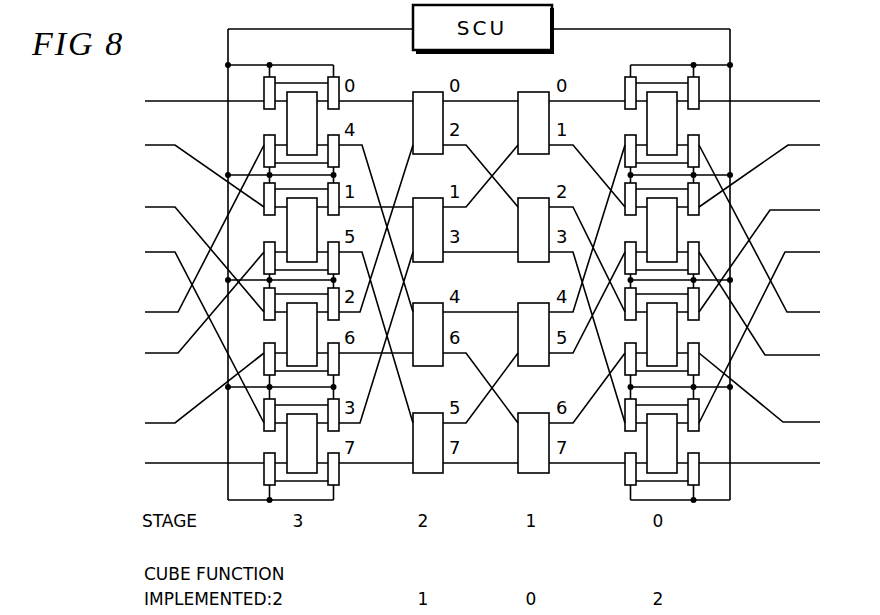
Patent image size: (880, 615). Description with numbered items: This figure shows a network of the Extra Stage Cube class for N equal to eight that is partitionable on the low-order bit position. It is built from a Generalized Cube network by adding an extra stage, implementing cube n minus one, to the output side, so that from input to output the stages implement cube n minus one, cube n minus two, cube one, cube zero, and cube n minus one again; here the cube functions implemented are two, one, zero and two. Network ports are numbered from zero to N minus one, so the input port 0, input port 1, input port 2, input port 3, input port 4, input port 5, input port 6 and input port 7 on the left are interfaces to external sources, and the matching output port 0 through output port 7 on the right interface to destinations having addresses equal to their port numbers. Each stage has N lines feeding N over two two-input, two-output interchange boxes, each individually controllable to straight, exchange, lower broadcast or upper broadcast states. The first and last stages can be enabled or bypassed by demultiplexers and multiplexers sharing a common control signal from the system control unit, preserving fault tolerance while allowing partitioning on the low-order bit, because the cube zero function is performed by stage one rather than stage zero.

The network port 0 is at (482, 88).
The network port 1 is at (482, 163).
The network port 2 is at (482, 248).
The network port 3 is at (482, 324).
The network port 4 is at (482, 228).
The network port 5 is at (482, 303).
The network port 6 is at (482, 388).
The network port 7 is at (482, 450).